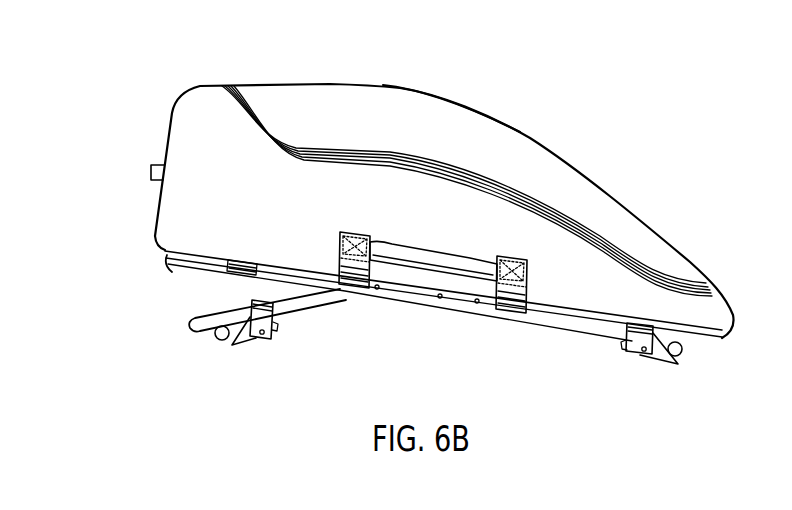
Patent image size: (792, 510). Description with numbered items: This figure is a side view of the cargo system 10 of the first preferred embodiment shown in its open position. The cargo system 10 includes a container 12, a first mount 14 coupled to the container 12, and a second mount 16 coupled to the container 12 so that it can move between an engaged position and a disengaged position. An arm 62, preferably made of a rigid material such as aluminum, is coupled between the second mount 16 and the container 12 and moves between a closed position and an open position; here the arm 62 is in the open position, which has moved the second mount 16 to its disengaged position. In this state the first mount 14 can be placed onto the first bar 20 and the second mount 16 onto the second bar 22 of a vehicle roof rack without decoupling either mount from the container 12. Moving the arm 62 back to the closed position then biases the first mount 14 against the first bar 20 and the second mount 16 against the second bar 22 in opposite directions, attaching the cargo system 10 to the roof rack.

The cargo system 10 is at (560, 102).
The container 12 is at (353, 97).
The first mount 14 is at (633, 353).
The second mount 16 is at (275, 333).
The first bar 20 is at (682, 357).
The second bar 22 is at (213, 337).
The arm 62 is at (190, 319).